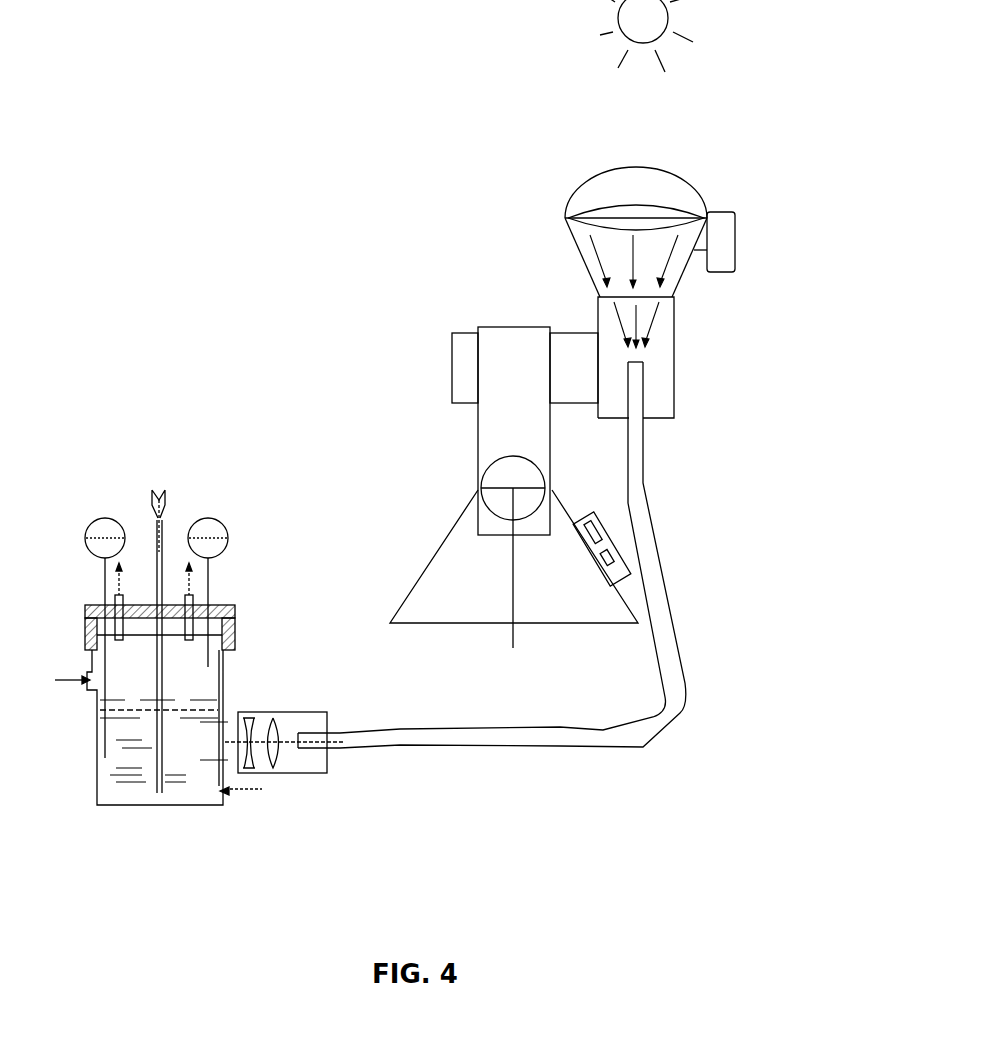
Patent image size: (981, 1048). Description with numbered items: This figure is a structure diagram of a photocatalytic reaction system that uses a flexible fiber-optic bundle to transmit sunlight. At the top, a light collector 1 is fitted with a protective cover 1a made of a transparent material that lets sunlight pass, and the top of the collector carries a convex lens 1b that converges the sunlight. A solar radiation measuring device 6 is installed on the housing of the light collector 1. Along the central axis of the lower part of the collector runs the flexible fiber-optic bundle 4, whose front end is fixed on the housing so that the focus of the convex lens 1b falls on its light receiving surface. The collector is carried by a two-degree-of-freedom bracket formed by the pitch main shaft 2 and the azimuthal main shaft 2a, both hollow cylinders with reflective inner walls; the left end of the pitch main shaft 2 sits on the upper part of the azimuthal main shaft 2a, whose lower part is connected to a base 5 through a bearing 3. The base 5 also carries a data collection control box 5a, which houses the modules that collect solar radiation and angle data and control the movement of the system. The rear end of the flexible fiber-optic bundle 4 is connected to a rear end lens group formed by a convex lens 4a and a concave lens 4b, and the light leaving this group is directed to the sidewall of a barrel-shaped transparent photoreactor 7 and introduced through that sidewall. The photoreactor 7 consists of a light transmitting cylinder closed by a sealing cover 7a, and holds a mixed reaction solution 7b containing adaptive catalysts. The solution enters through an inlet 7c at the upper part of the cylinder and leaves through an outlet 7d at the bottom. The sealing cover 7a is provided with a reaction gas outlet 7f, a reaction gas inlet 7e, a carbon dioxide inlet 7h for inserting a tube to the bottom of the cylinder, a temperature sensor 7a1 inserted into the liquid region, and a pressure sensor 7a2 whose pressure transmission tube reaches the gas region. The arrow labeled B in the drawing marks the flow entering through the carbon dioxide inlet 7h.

The light collector 1 is at (573, 247).
The protective cover 1a is at (648, 167).
The convex lens 1b is at (667, 210).
The pitch main shaft 2 is at (452, 360).
The azimuthal main shaft 2a is at (477, 428).
The bearing 3 is at (483, 462).
The flexible fiber-optic bundle 4 is at (645, 370).
The convex lens 4a is at (285, 711).
The concave lens 4b is at (260, 716).
The base 5 is at (427, 565).
The data collection control box 5a is at (599, 514).
The solar radiation measuring device 6 is at (735, 243).
The photoreactor 7 is at (223, 668).
The sealing cover 7a is at (233, 617).
The temperature sensor 7a1 is at (105, 638).
The pressure sensor 7a2 is at (208, 592).
The mixed reaction solution 7b is at (212, 716).
The inlet 7c is at (83, 677).
The outlet 7d is at (229, 791).
The reaction gas inlet 7e is at (195, 598).
The reaction gas outlet 7f is at (125, 598).
The carbon dioxide inlet 7h is at (158, 598).
The gas supply flow B is at (168, 518).